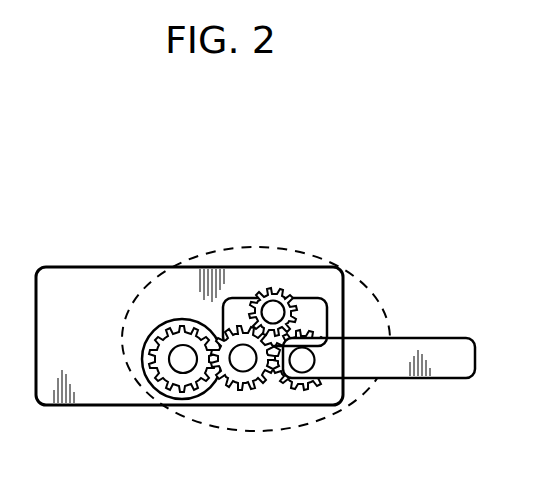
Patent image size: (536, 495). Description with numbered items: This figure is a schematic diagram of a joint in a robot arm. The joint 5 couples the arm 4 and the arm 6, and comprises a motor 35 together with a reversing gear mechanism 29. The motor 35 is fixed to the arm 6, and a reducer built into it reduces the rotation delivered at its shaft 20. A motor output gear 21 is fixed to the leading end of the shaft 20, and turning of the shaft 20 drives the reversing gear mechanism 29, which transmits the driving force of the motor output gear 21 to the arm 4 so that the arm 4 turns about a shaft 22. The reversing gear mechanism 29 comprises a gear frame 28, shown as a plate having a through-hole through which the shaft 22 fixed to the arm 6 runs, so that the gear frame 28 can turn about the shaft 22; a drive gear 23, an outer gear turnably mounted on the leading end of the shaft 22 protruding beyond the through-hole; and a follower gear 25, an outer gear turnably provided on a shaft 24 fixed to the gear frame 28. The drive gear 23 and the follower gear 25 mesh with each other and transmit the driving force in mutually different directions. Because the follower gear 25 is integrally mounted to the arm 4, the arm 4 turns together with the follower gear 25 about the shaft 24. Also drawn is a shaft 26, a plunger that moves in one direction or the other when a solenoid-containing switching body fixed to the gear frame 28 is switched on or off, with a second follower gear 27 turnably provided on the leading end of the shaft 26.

The arm 4 is at (422, 338).
The joint 5 is at (190, 253).
The arm 6 is at (120, 267).
The shaft 20 is at (182, 359).
The motor output gear 21 is at (180, 388).
The shaft 22 is at (243, 358).
The drive gear 23 is at (250, 392).
The shaft 24 is at (302, 360).
The follower gear 25 is at (318, 385).
The shaft 26 is at (272, 312).
The follower gear 27 is at (272, 294).
The gear frame 28 is at (326, 312).
The reversing gear mechanism 29 is at (313, 327).
The motor 35 is at (145, 342).